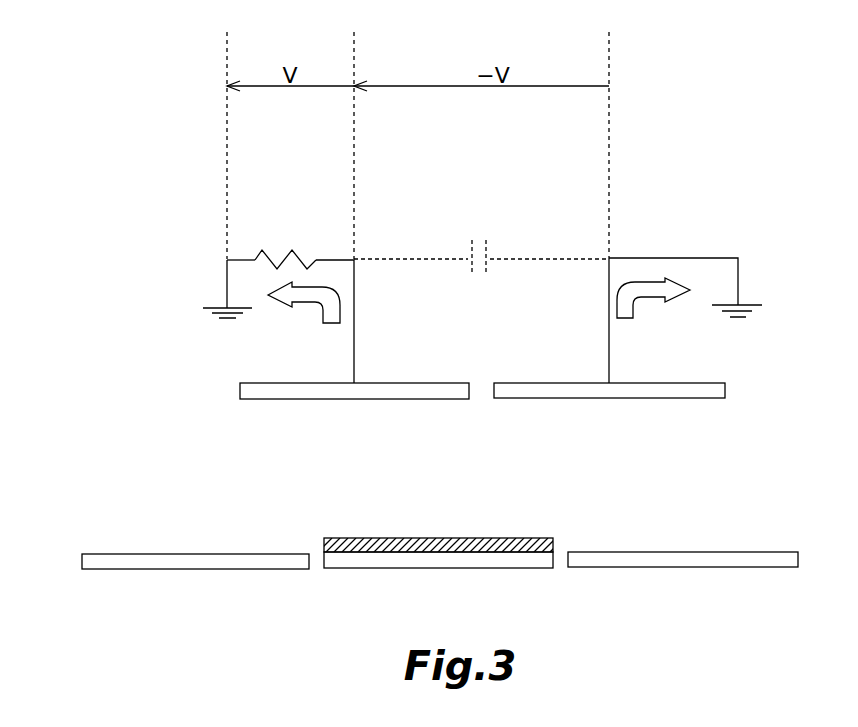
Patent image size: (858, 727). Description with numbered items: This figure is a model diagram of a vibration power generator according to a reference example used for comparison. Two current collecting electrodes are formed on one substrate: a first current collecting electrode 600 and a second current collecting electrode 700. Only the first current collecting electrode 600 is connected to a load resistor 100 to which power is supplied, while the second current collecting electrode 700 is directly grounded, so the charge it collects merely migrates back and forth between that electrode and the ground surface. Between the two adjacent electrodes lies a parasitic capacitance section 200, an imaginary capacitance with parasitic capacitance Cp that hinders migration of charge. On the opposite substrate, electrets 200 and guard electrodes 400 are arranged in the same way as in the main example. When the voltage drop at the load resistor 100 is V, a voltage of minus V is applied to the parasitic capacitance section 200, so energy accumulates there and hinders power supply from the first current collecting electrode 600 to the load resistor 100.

The load resistor 100 is at (295, 248).
The parasitic capacitance section 200 is at (485, 242).
The guard electrodes 400 is at (238, 569).
The first current collecting electrode 600 is at (263, 399).
The second current collecting electrode 700 is at (637, 398).